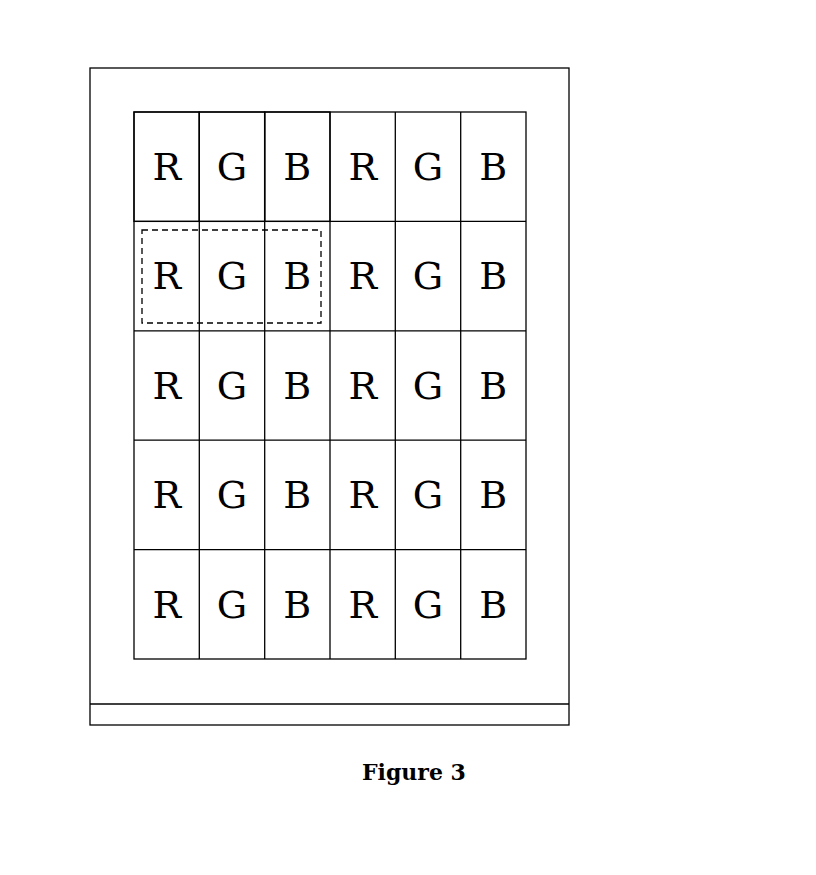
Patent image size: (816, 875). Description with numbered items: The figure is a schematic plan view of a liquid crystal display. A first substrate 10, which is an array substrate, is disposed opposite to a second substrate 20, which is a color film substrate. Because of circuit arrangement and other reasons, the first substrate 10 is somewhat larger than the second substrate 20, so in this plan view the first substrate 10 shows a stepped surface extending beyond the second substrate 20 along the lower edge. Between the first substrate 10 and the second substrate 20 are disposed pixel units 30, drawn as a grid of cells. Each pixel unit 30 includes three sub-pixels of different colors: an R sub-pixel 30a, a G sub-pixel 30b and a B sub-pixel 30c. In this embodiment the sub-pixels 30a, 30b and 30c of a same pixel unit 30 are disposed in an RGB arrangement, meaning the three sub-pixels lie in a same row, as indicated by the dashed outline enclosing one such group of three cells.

The first substrate 10 is at (569, 708).
The second substrate 20 is at (569, 186).
The pixel unit 30 is at (142, 268).
The R sub-pixel 30a is at (168, 135).
The G sub-pixel 30b is at (233, 135).
The B sub-pixel 30c is at (298, 135).